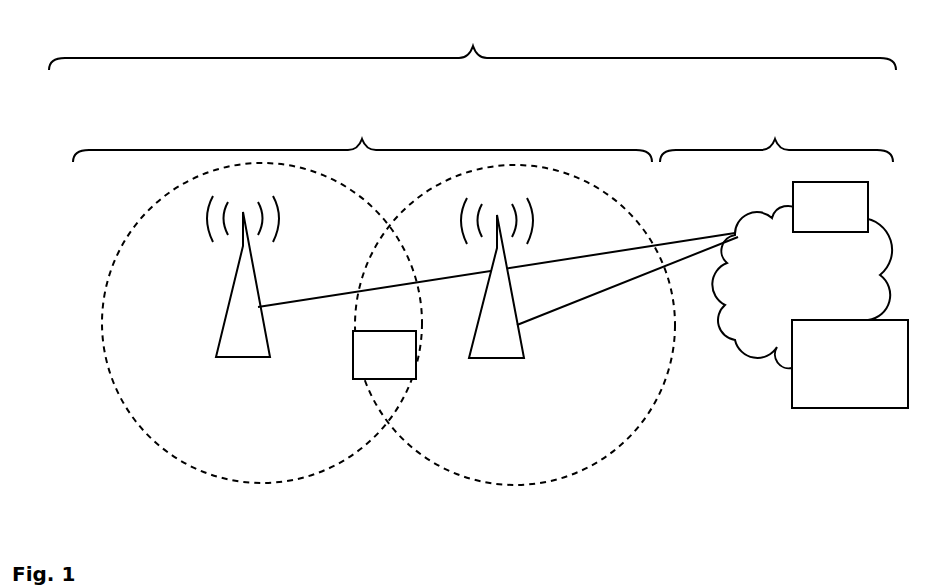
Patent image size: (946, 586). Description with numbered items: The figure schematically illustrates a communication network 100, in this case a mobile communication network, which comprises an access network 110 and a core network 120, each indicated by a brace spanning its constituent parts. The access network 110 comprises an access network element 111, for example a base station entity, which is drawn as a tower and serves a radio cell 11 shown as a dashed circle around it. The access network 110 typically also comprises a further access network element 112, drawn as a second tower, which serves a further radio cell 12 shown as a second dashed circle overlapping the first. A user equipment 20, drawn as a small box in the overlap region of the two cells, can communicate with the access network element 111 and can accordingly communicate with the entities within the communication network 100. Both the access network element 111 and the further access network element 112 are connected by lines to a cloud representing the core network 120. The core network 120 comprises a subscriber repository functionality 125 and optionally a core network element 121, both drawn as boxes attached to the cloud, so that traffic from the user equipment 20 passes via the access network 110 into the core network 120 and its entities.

The communication network 100 is at (472, 45).
The access network 110 is at (362, 137).
The core network 120 is at (776, 137).
The radio cell 11 is at (155, 441).
The further radio cell 12 is at (427, 458).
The access network element 111 is at (471, 276).
The further access network element 112 is at (599, 278).
The user equipment 20 is at (384, 355).
The core network element 121 is at (830, 207).
The subscriber repository functionality 125 is at (850, 364).